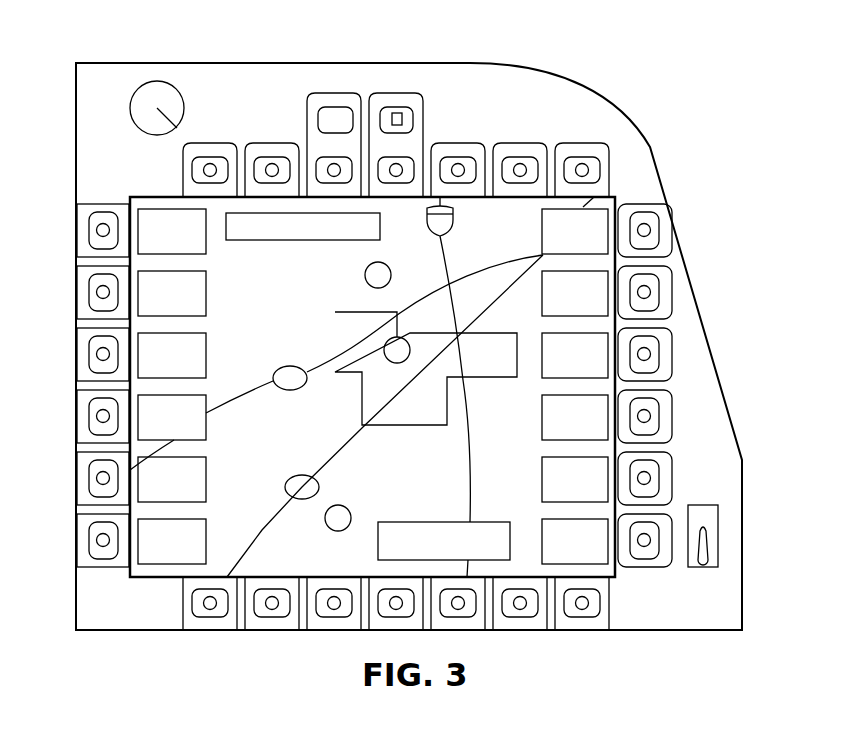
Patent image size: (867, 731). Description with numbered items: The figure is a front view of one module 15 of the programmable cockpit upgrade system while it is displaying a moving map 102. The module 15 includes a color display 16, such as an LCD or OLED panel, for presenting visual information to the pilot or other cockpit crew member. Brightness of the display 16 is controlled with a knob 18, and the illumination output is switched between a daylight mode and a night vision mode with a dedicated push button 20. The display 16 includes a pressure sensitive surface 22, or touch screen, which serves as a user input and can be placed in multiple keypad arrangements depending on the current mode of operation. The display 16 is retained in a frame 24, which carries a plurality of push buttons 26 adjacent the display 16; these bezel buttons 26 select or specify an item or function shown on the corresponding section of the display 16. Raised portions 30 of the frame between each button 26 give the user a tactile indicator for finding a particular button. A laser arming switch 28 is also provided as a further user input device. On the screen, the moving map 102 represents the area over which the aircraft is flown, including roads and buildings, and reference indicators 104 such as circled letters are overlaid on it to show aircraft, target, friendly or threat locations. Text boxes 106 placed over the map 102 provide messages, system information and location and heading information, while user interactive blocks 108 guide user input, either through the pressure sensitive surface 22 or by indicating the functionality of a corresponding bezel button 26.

The module 15 is at (401, 371).
The color display 16 is at (293, 550).
The knob 18 is at (152, 98).
The dedicated push button 20 is at (333, 107).
The pressure sensitive surface 22 is at (395, 367).
The frame 24 is at (585, 107).
The push buttons 26 is at (512, 168).
The laser arming switch 28 is at (704, 558).
The raised portions 30 is at (241, 170).
The moving map 102 is at (362, 387).
The reference indicators 104 is at (406, 340).
The text boxes 106 is at (300, 240).
The user interactive blocks 108 is at (206, 280).